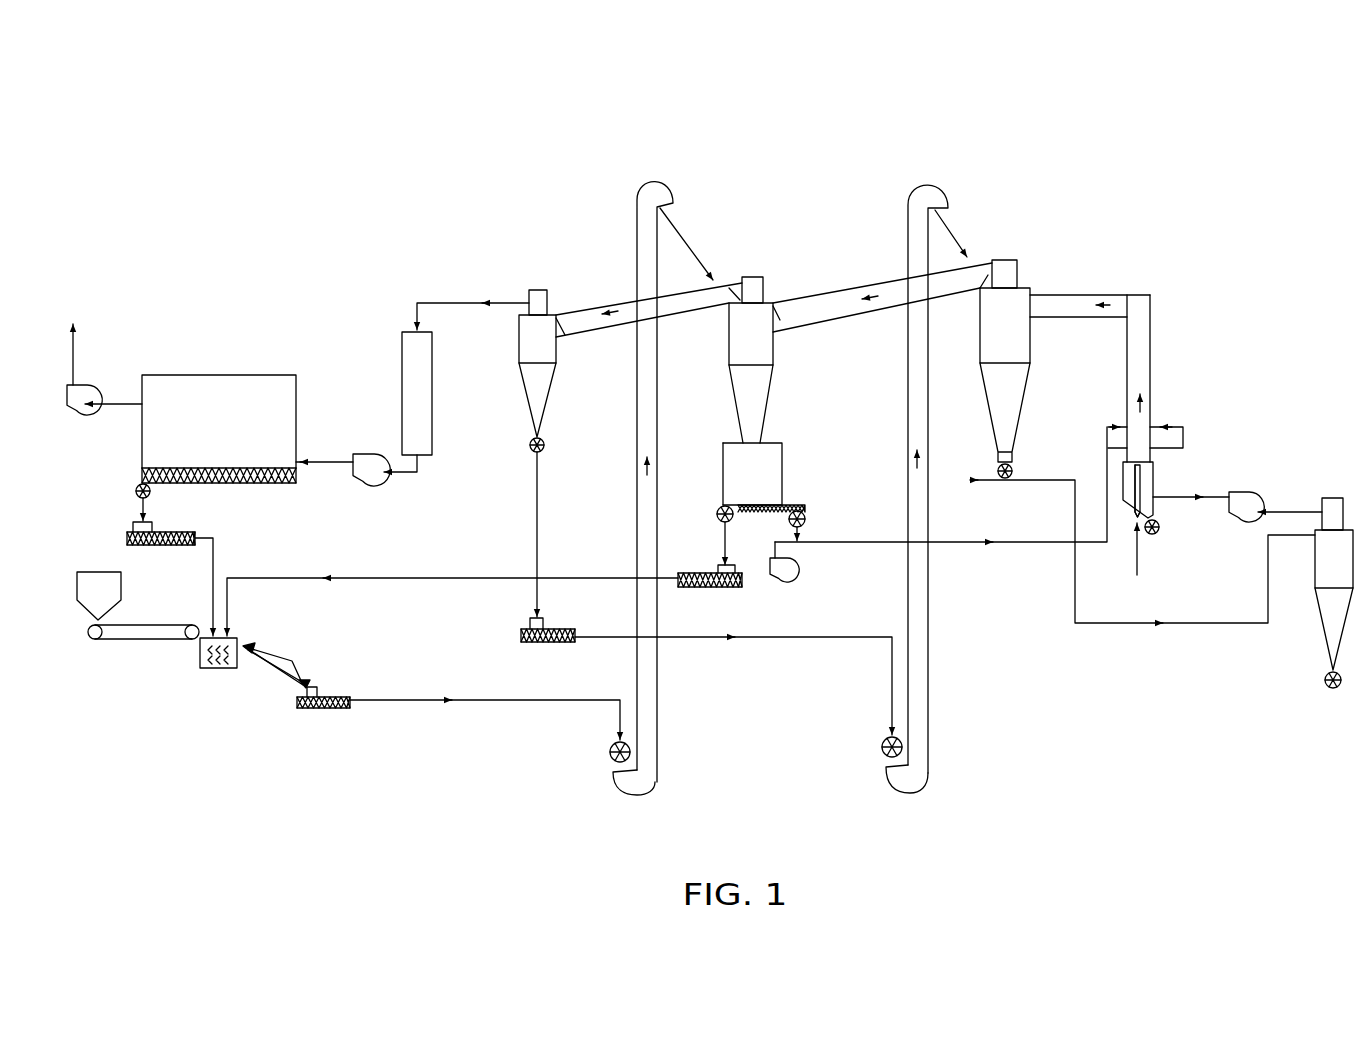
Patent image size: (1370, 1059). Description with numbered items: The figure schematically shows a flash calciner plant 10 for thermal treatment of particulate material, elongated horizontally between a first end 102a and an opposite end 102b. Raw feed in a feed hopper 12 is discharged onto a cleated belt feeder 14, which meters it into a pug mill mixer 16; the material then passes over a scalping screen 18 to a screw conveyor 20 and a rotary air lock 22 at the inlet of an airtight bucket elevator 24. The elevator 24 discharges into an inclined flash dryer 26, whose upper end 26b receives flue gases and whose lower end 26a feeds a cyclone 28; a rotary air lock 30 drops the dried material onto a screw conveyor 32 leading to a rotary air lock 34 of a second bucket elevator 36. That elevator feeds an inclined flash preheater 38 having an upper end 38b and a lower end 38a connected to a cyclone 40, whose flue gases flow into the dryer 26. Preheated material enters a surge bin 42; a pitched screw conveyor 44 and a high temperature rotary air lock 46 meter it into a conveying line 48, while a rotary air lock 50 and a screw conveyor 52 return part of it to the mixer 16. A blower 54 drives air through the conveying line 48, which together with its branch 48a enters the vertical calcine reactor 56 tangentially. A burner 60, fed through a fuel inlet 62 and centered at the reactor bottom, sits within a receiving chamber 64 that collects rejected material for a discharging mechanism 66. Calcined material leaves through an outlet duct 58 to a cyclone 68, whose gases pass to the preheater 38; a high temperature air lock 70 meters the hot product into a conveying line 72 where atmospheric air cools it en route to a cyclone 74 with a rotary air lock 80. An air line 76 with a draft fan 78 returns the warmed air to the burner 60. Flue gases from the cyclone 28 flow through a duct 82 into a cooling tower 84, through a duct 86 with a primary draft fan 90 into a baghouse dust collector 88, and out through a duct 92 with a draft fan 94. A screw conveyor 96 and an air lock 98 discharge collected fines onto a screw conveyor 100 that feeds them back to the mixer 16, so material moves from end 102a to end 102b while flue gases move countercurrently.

The plant 10 is at (1138, 140).
The feed hopper 12 is at (78, 572).
The feeder 14 is at (128, 640).
The mixer 16 is at (215, 668).
The scalping screen 18 is at (275, 648).
The screw conveyor 20 is at (320, 708).
The rotary air lock 22 is at (610, 752).
The bucket elevator 24 is at (657, 677).
The flash dryer 26 is at (692, 328).
The lower end 26a is at (550, 303).
The upper end 26b is at (732, 280).
The cyclone 28 is at (548, 387).
The rotary air lock 30 is at (545, 447).
The screw conveyor 32 is at (545, 645).
The rotary air lock 34 is at (880, 748).
The bucket elevator 36 is at (928, 675).
The flash preheater 38 is at (868, 333).
The lower end 38a is at (780, 298).
The upper end 38b is at (983, 263).
The cyclone 40 is at (770, 398).
The surge bin 42 is at (716, 465).
The pitched screw conveyor 44 is at (798, 505).
The rotary air lock 46 is at (807, 518).
The conveying line 48 is at (965, 548).
The branch 48a is at (1185, 437).
The rotary air lock 50 is at (718, 515).
The screw conveyor 52 is at (733, 588).
The blower 54 is at (795, 577).
The calcine reactor 56 is at (1152, 333).
The outlet duct 58 is at (1090, 295).
The burner 60 is at (1153, 478).
The fuel inlet 62 is at (1128, 550).
The receiving chamber 64 is at (1160, 510).
The discharging mechanism 66 is at (1155, 537).
The cyclone 68 is at (1022, 388).
The high temperature air lock 70 is at (996, 473).
The conveying line 72 is at (1190, 625).
The cyclone 74 is at (1318, 607).
The air line 76 is at (1320, 477).
The draft fan 78 is at (1255, 492).
The rotary air lock 80 is at (1325, 687).
The duct 82 is at (445, 303).
The cooling tower 84 is at (432, 387).
The duct 86 is at (404, 486).
The dust collector 88 is at (255, 375).
The fan 90 is at (368, 486).
The duct 92 is at (118, 400).
The draft fan 94 is at (80, 418).
The screw conveyor 96 is at (253, 468).
The air lock 98 is at (152, 493).
The screw conveyor 100 is at (170, 546).
The end 102a is at (151, 281).
The end 102b is at (1275, 278).